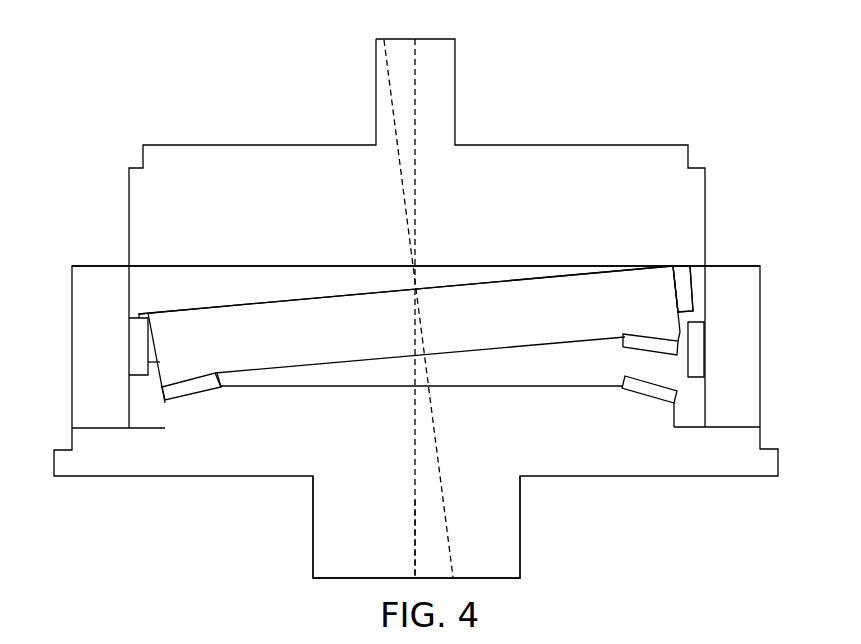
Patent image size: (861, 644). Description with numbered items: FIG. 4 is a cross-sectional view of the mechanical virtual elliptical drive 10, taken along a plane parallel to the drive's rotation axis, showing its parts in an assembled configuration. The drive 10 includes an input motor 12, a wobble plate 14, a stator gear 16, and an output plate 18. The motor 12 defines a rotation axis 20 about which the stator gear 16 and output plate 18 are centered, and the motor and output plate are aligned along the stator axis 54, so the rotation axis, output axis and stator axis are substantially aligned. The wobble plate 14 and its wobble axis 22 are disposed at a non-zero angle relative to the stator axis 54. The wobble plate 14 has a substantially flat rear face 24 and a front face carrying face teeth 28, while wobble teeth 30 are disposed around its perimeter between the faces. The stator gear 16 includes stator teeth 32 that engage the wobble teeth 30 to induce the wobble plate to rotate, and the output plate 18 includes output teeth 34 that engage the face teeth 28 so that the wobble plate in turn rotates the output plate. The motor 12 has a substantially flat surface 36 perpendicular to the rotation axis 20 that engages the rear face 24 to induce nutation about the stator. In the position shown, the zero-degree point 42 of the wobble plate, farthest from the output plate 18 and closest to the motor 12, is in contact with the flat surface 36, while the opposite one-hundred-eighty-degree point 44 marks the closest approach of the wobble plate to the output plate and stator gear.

The mechanical virtual elliptical drive 10 is at (111, 116).
The input motor 12 is at (456, 120).
The wobble plate 14 is at (664, 331).
The stator gear 16 is at (82, 400).
The output plate 18 is at (507, 540).
The rotation axis 20 is at (420, 92).
The wobble axis 22 is at (390, 93).
The rear face 24 is at (268, 293).
The face teeth 28 is at (632, 340).
The wobble teeth 30 is at (686, 293).
The stator teeth 32 is at (696, 358).
The output teeth 34 is at (638, 398).
The flat surface 36 is at (196, 276).
The 0-degree point 42 is at (672, 266).
The 180-degree point 44 is at (160, 312).
The stator axis 54 is at (410, 520).